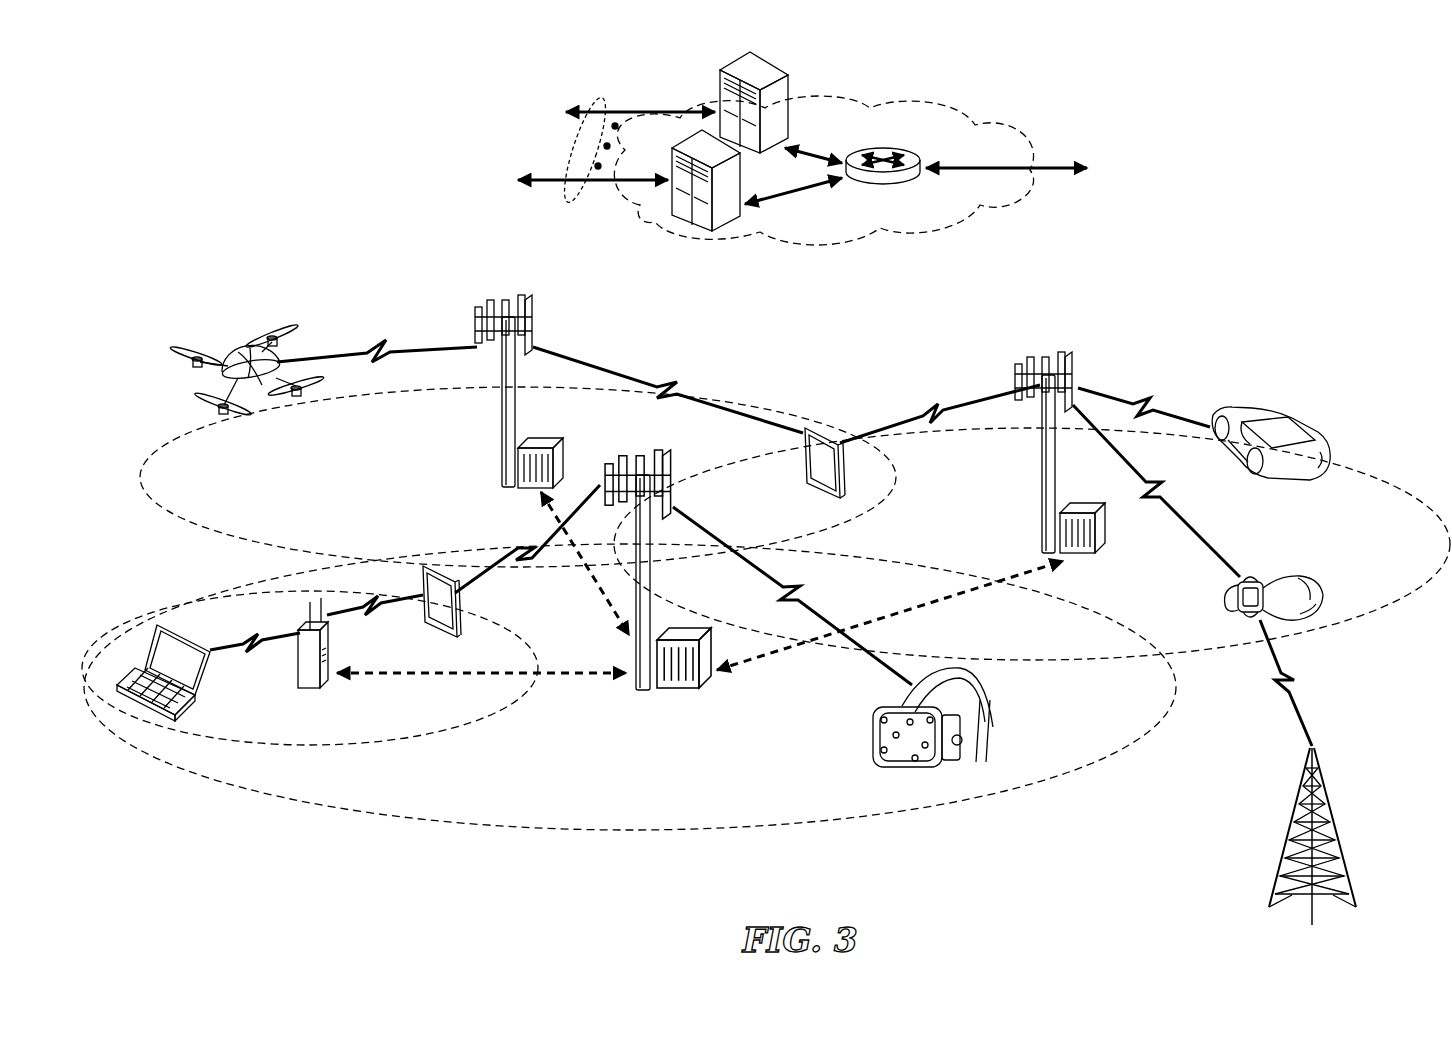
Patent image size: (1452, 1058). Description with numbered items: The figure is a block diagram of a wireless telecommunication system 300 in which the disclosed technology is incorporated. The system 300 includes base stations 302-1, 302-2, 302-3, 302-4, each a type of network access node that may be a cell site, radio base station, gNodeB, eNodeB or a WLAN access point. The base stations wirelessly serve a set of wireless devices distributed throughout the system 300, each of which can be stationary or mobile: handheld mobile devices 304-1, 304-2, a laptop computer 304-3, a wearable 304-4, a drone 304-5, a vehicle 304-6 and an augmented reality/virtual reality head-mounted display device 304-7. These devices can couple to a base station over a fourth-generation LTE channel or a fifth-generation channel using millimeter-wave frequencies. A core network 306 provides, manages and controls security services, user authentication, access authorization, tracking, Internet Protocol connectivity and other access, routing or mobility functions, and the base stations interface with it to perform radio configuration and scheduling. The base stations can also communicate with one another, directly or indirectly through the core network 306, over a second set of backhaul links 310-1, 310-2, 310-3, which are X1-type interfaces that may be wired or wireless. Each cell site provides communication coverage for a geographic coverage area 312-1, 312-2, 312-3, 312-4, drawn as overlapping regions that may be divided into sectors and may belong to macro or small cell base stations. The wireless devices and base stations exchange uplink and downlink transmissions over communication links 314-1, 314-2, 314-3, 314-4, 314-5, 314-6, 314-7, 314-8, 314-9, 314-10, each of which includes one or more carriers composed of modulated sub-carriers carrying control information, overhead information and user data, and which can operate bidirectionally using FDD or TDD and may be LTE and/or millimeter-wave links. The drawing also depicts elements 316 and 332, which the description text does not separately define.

The wireless telecommunication system 300 is at (1348, 158).
The base station 302-1 is at (643, 693).
The base station 302-2 is at (500, 430).
The base station 302-3 is at (1040, 467).
The base station 302-4 is at (300, 677).
The wireless device 304-1 is at (460, 610).
The wireless device 304-2 is at (803, 460).
The wireless device 304-3 is at (140, 717).
The wireless device 304-4 is at (1255, 575).
The wireless device 304-5 is at (258, 397).
The wireless device 304-6 is at (1293, 421).
The wireless device 304-7 is at (994, 704).
The core network 306 is at (918, 235).
The backhaul link 310-1 is at (370, 676).
The backhaul link 310-2 is at (959, 596).
The backhaul link 310-3 is at (603, 590).
The geographic coverage area 312-1 is at (565, 828).
The geographic coverage area 312-2 is at (440, 730).
The geographic coverage area 312-3 is at (205, 547).
The geographic coverage area 312-4 is at (1353, 467).
The communication link 314-1 is at (810, 598).
The communication link 314-2 is at (520, 540).
The communication link 314-3 is at (223, 648).
The communication link 314-4 is at (372, 613).
The communication link 314-5 is at (383, 347).
The communication link 314-6 is at (677, 380).
The communication link 314-7 is at (928, 407).
The communication link 314-8 is at (1173, 512).
The communication link 314-9 is at (1142, 393).
The communication link 314-10 is at (1295, 687).
The radio tower 316 is at (1326, 816).
The external network link 332 is at (572, 192).